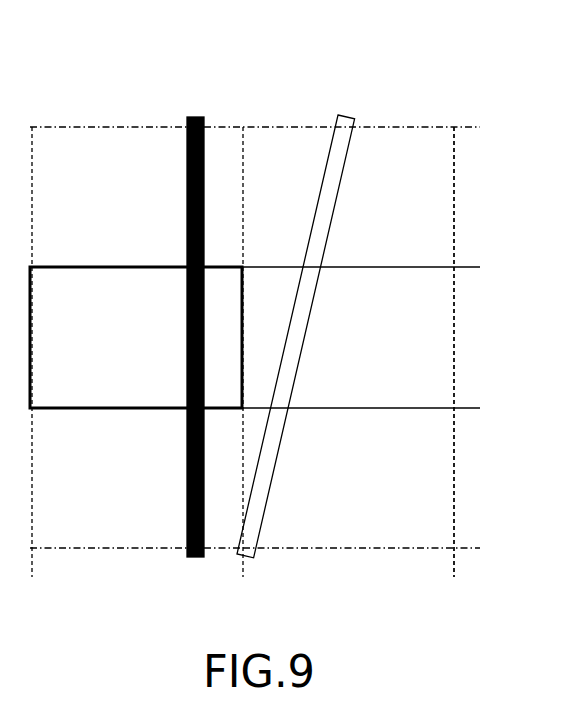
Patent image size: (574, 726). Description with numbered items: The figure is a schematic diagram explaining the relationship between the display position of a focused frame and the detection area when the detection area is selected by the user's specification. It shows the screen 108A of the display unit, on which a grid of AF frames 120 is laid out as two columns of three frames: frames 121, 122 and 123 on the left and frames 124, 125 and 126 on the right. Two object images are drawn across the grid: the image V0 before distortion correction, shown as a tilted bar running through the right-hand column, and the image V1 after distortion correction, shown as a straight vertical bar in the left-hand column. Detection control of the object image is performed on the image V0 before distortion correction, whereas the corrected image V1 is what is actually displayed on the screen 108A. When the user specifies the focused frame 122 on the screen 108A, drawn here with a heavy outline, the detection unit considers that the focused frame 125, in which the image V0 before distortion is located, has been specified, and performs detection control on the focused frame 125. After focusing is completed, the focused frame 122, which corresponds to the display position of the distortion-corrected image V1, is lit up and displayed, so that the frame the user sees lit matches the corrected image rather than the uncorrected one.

The AF frame 120 is at (63, 127).
The AF frame 121 is at (86, 245).
The focused frame 122 is at (86, 394).
The third region 123 is at (86, 536).
The AF frame 124 is at (436, 245).
The focused frame 125 is at (436, 395).
The sixth region 126 is at (436, 536).
The image after distortion correction V1 is at (193, 117).
The image before distortion correction V0 is at (338, 113).
The screen 108A is at (466, 108).